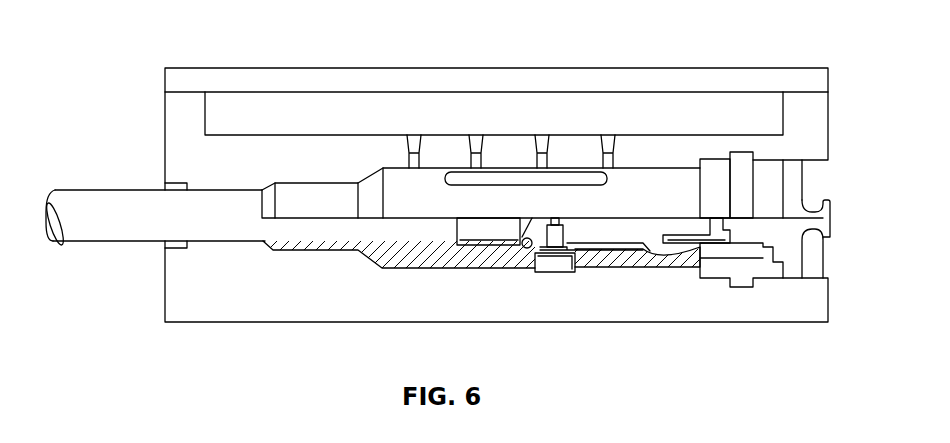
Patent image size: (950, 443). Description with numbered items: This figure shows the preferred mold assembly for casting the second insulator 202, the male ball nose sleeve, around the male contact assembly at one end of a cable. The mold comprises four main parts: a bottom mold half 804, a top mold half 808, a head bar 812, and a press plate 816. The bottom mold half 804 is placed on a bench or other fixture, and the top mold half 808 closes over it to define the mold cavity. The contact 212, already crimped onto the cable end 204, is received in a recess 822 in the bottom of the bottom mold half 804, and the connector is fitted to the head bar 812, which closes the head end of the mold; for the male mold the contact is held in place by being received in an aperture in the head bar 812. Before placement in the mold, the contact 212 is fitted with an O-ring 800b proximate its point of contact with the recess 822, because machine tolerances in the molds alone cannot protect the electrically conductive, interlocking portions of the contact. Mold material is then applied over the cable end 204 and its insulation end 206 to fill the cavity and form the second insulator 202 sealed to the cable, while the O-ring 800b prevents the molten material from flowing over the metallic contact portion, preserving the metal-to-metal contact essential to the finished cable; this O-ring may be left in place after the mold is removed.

The second insulator 202 is at (658, 265).
The cable end 204 is at (114, 187).
The insulation end 206 is at (102, 226).
The contact 212 is at (676, 233).
The pin 800b is at (528, 249).
The bottom mold half 804 is at (197, 298).
The top mold half 808 is at (181, 147).
The head bar 812 is at (772, 178).
The press plate 816 is at (426, 116).
The recess 822 is at (366, 267).